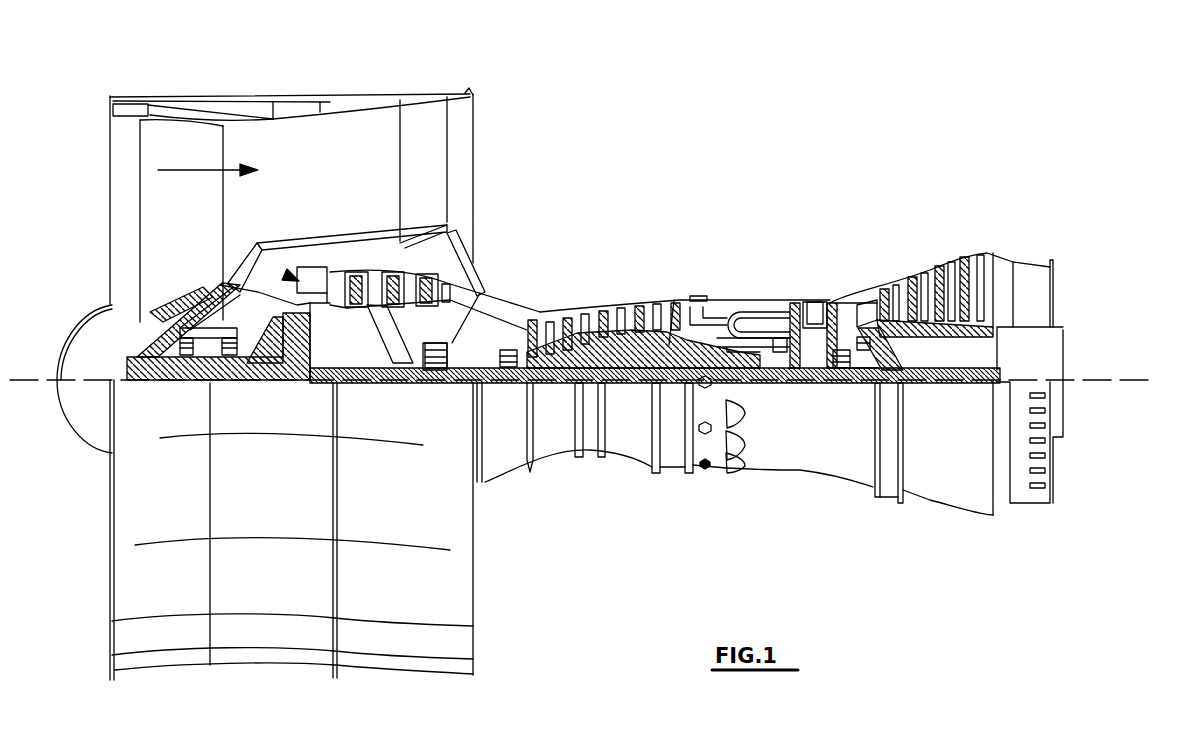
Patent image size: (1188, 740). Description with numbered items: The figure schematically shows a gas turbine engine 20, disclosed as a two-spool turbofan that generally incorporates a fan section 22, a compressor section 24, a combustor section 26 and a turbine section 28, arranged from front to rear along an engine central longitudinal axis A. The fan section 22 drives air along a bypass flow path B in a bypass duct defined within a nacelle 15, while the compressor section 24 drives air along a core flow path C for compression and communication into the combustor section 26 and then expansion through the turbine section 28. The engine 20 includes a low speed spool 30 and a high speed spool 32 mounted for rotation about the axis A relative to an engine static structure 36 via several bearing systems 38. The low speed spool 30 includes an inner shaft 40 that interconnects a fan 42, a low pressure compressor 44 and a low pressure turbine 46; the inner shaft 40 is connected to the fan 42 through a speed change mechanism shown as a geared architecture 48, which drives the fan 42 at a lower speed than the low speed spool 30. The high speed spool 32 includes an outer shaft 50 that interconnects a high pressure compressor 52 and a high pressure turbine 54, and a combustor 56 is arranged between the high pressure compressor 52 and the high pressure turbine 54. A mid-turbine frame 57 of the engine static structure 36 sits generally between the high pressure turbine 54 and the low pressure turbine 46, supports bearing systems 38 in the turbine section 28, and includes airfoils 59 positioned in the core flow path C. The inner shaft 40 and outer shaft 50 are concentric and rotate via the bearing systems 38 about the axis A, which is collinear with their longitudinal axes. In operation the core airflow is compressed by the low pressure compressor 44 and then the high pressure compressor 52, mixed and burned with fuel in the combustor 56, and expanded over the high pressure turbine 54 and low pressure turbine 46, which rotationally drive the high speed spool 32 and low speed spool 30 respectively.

The nacelle 15 is at (296, 100).
The gas turbine engine 20 is at (760, 138).
The fan section 22 is at (218, 80).
The compressor section 24 is at (527, 281).
The combustor section 26 is at (747, 272).
The turbine section 28 is at (896, 235).
The low speed spool 30 is at (632, 395).
The high speed spool 32 is at (674, 300).
The engine static structure 36 is at (672, 477).
The bearing systems 38 is at (428, 362).
The inner shaft 40 is at (494, 385).
The fan 42 is at (197, 221).
The low pressure compressor 44 is at (392, 298).
The low pressure turbine 46 is at (940, 266).
The geared architecture 48 is at (297, 362).
The outer shaft 50 is at (762, 372).
The high pressure compressor 52 is at (610, 347).
The high pressure turbine 54 is at (815, 303).
The combustor 56 is at (748, 324).
The mid-turbine frame 57 is at (860, 289).
The airfoils 59 is at (860, 318).
The engine central longitudinal axis A is at (1147, 380).
The bypass flow path B is at (198, 170).
The core flow path C is at (284, 275).